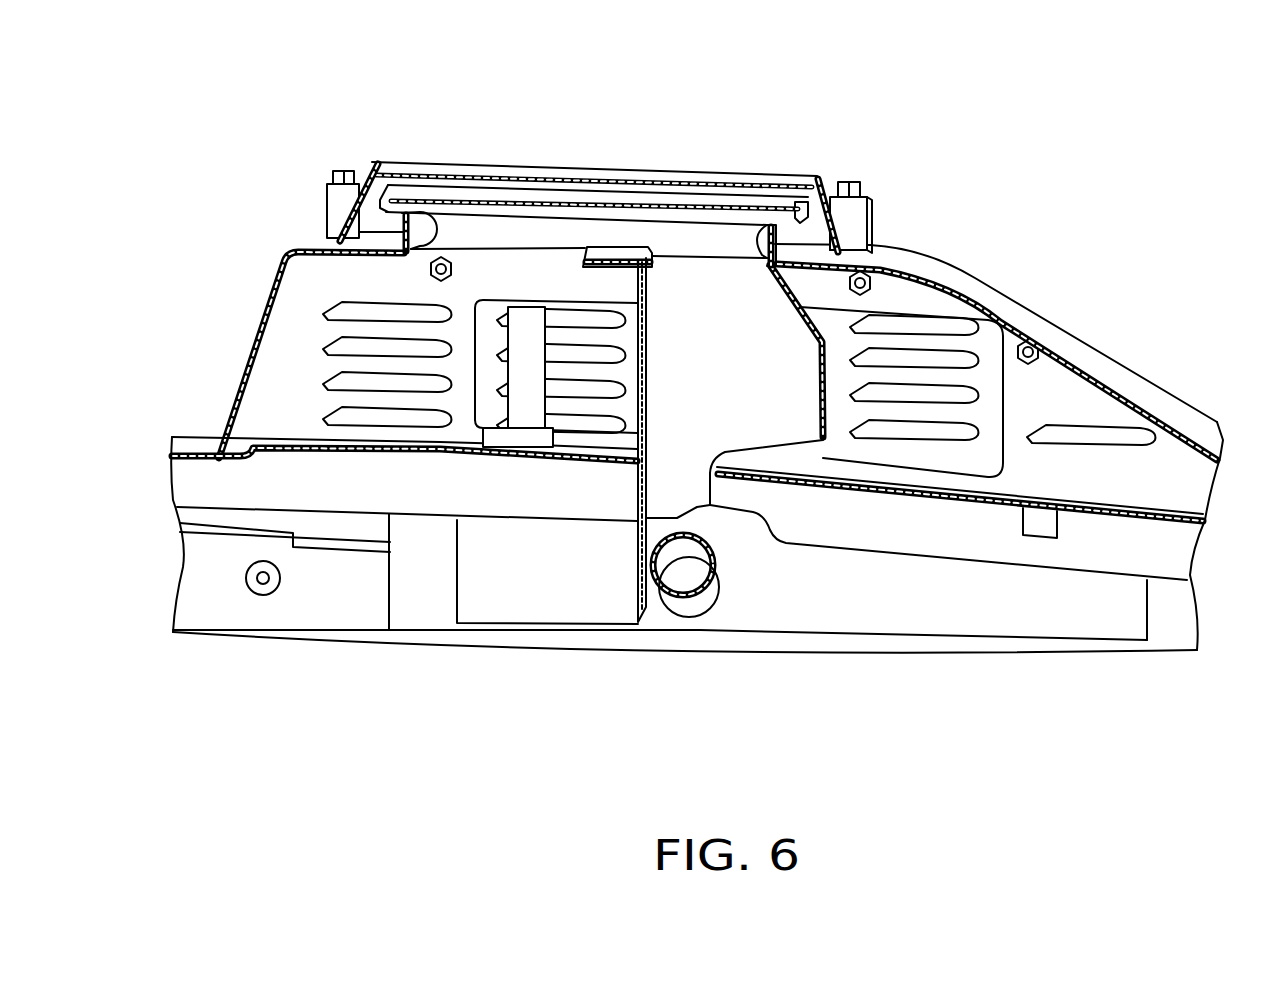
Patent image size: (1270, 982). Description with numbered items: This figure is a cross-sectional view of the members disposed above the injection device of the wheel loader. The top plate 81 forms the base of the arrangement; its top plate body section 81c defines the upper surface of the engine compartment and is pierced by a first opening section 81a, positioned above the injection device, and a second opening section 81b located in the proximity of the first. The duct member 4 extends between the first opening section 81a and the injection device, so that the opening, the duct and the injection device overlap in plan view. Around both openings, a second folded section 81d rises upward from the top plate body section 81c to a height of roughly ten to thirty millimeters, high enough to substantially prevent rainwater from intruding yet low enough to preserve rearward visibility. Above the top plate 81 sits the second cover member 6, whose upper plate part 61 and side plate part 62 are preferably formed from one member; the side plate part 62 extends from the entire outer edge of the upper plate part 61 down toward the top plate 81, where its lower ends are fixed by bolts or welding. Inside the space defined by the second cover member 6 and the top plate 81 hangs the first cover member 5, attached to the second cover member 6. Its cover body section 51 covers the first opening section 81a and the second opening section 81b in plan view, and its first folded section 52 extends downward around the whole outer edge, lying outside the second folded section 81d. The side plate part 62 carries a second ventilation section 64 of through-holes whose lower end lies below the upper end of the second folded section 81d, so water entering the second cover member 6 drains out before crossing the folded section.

The duct member 4 is at (790, 454).
The first cover member 5 is at (642, 187).
The second cover member 6 is at (541, 165).
The cover body section 51 is at (667, 197).
The first folded section 52 is at (820, 186).
The upper plate part 61 is at (568, 172).
The side plate part 62 is at (360, 168).
The second ventilation section 64 is at (866, 242).
The top plate 81 is at (1104, 347).
The first opening section 81a is at (762, 252).
The second opening section 81b is at (437, 232).
The top plate body section 81c is at (1024, 303).
The second folded section 81d is at (762, 240).